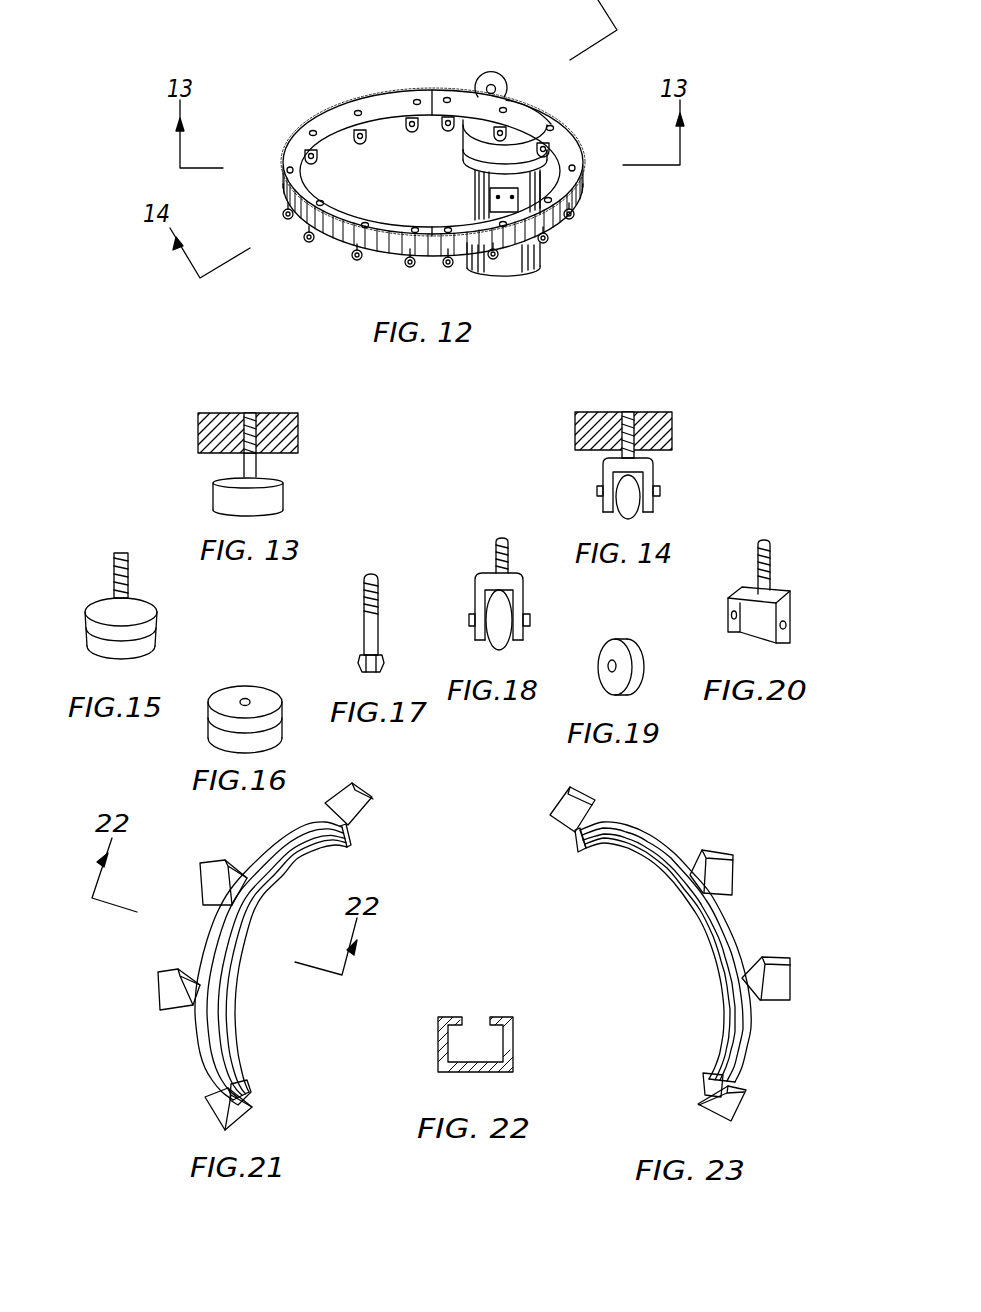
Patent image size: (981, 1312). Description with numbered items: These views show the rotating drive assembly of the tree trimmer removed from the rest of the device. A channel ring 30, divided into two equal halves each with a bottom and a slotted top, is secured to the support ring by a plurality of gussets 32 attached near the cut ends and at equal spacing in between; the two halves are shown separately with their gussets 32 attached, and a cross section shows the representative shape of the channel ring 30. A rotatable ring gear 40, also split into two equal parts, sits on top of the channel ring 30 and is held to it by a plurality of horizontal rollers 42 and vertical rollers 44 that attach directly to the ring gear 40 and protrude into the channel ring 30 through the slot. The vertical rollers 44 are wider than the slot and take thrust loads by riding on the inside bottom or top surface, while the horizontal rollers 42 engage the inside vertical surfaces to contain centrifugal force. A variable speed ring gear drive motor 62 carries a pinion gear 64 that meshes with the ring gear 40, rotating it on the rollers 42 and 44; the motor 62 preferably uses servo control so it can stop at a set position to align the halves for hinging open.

In FIG. 21, the channel ring 30 is at (236, 1040).
In FIG. 22, the channel ring 30 is at (450, 1018).
In FIG. 23, the channel ring 30 is at (694, 960).
In FIG. 21, the gussets 32 is at (372, 797).
In FIG. 23, the gussets 32 is at (594, 800).
In FIG. 12, the ring gear 40 is at (361, 100).
In FIG. 13, the ring gear 40 is at (208, 413).
In FIG. 14, the ring gear 40 is at (641, 411).
In FIG. 12, the horizontal rollers 42 is at (408, 268).
In FIG. 13, the horizontal rollers 42 is at (283, 497).
In FIG. 15, the horizontal rollers 42 is at (100, 598).
In FIG. 16, the horizontal rollers 42 is at (250, 686).
In FIG. 17, the horizontal rollers 42 is at (378, 618).
In FIG. 12, the vertical rollers 44 is at (357, 261).
In FIG. 14, the vertical rollers 44 is at (655, 492).
In FIG. 18, the vertical rollers 44 is at (523, 622).
In FIG. 19, the vertical rollers 44 is at (677, 622).
In FIG. 20, the vertical rollers 44 is at (788, 596).
In FIG. 12, the variable speed ring gear drive motor 62 is at (523, 252).
In FIG. 12, the pinion gear 64 is at (490, 74).